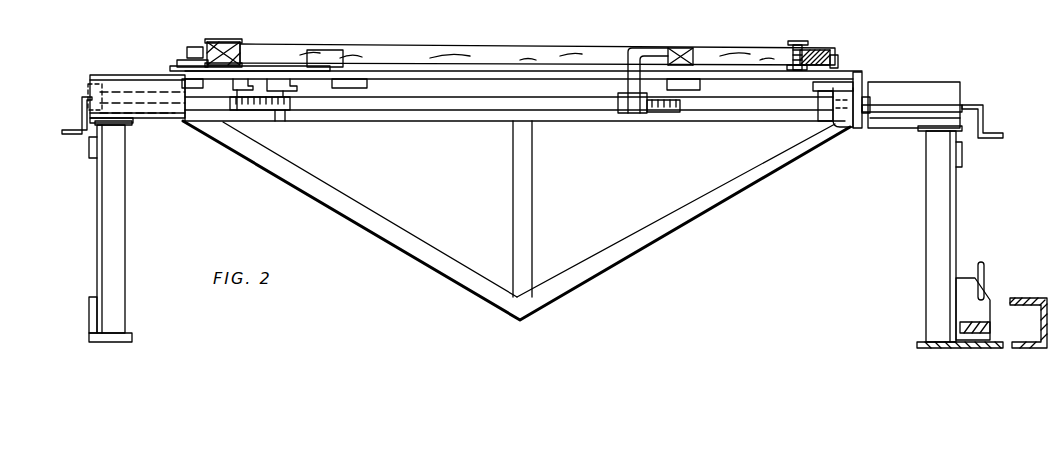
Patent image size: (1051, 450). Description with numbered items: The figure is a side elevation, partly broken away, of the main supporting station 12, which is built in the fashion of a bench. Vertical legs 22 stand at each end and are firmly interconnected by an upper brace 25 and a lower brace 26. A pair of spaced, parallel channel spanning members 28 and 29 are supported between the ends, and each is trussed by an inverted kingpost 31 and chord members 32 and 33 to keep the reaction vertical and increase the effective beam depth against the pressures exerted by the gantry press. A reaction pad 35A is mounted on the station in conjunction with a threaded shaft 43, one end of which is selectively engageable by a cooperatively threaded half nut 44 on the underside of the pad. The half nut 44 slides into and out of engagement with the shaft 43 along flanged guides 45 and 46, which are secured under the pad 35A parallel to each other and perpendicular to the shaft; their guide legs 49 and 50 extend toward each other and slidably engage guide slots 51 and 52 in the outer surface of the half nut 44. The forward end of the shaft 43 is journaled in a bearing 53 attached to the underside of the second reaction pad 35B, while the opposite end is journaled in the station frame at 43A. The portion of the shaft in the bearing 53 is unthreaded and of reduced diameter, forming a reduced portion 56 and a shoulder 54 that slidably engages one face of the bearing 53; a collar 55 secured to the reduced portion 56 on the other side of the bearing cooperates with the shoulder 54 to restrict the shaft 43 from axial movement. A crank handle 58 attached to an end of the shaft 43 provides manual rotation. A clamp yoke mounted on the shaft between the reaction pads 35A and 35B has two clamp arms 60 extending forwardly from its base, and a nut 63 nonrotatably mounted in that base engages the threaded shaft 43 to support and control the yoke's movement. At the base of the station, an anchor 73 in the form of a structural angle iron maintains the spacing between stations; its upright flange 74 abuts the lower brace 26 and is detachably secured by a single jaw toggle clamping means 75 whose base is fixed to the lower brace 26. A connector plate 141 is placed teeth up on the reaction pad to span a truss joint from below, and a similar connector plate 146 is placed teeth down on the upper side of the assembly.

The main supporting station 12 is at (780, 207).
The vertical legs 22 is at (108, 213).
The upper brace 25 is at (91, 148).
The lower brace 26 is at (92, 316).
The spanning member 28 is at (137, 112).
The spanning member 29 is at (920, 98).
The inverted kingpost 31 is at (525, 215).
The chord member 32 is at (390, 232).
The chord member 33 is at (680, 213).
The reaction pad 35A is at (172, 70).
The second reaction pad 35B is at (862, 78).
The threaded shaft 43 is at (445, 104).
The journal in frame 43A is at (90, 90).
The half nut 44 is at (280, 115).
The flanged guide 45 is at (236, 82).
The flanged guide 46 is at (299, 78).
The guide leg 49 is at (237, 110).
The guide leg 50 is at (283, 100).
The guide slot 51 is at (247, 88).
The guide slot 52 is at (270, 82).
The bearing 53 is at (847, 130).
The shoulder 54 is at (850, 126).
The collar 55 is at (863, 100).
The reduced portion 56 is at (893, 108).
The crank handle 58 is at (84, 119).
The clamp arm 60 is at (630, 68).
The nut 63 is at (625, 107).
The anchor means 73 is at (961, 341).
The upright flange 74 is at (958, 326).
The clamping means 75 is at (982, 300).
The connector plate 141 is at (218, 62).
The connector plate 146 is at (222, 40).